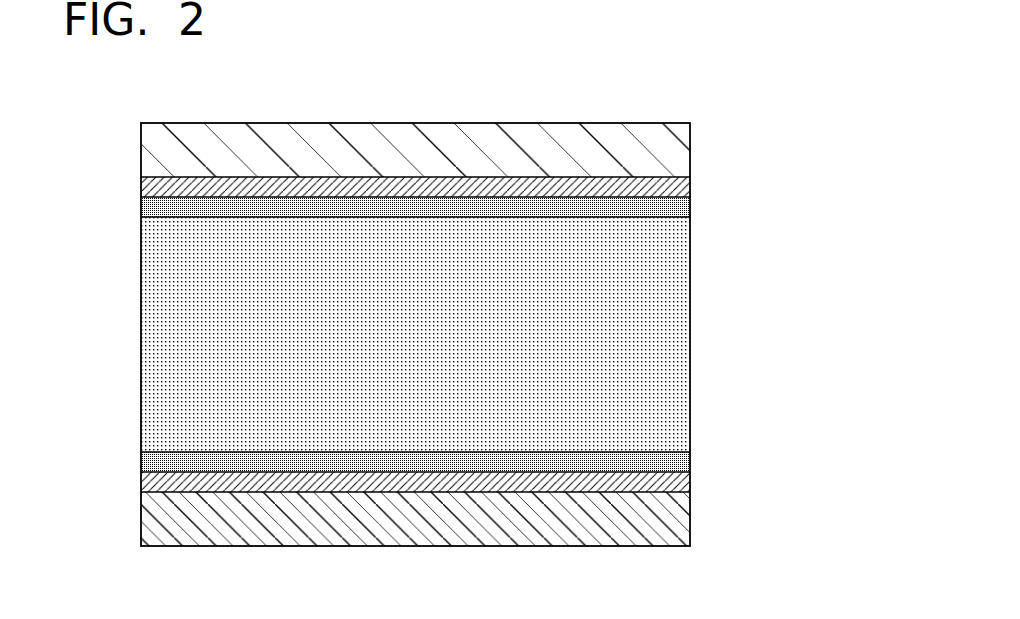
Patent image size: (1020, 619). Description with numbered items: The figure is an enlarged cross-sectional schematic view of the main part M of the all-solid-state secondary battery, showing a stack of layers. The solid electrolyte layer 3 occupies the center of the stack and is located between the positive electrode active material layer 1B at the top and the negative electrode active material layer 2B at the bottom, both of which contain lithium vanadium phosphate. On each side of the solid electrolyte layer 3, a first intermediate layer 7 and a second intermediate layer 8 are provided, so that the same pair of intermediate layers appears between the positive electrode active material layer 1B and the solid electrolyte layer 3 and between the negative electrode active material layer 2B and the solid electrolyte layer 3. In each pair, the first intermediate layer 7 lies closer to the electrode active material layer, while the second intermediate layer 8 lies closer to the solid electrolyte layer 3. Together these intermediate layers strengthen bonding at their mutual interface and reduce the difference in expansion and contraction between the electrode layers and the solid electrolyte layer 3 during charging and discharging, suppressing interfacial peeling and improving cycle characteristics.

The main part M is at (709, 97).
The positive electrode active material layer 1B is at (673, 152).
The negative electrode active material layer 2B is at (677, 518).
The solid electrolyte layer 3 is at (673, 335).
The first intermediate layer 7 is at (677, 189).
The second intermediate layer 8 is at (673, 208).